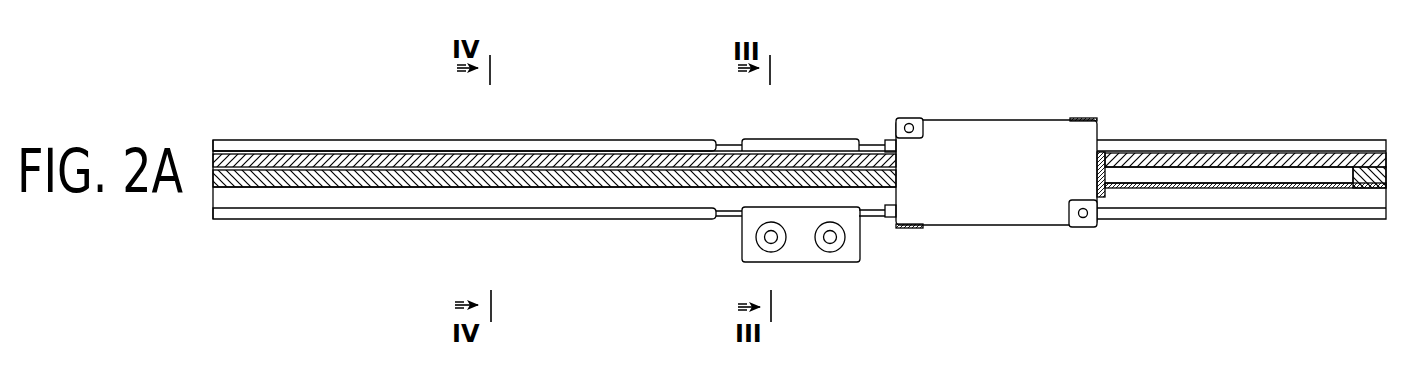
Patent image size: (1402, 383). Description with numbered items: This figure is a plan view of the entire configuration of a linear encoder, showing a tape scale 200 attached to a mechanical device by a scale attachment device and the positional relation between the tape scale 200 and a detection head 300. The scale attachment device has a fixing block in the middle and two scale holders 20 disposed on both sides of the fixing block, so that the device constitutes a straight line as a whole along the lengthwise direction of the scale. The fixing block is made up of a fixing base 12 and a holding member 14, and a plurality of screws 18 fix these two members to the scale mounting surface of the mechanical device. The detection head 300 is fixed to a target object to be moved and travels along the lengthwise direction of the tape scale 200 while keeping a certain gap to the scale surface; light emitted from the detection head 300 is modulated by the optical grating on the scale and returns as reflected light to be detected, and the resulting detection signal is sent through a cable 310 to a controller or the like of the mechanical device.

The fixing base 12 is at (818, 139).
The holding member 14 is at (819, 263).
The screws 18 is at (757, 237).
The scale holder 20 is at (395, 219).
The tape scale 200 is at (1341, 196).
The detection head 300 is at (1013, 120).
The cable 310 is at (1257, 173).